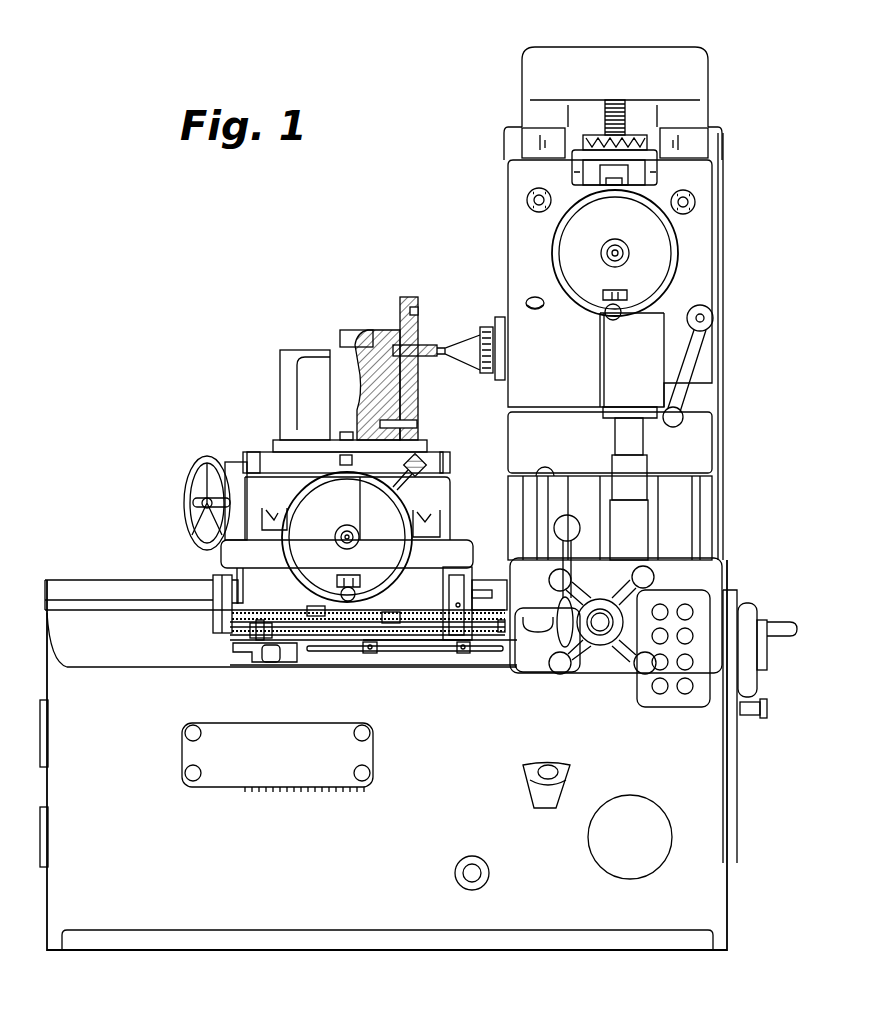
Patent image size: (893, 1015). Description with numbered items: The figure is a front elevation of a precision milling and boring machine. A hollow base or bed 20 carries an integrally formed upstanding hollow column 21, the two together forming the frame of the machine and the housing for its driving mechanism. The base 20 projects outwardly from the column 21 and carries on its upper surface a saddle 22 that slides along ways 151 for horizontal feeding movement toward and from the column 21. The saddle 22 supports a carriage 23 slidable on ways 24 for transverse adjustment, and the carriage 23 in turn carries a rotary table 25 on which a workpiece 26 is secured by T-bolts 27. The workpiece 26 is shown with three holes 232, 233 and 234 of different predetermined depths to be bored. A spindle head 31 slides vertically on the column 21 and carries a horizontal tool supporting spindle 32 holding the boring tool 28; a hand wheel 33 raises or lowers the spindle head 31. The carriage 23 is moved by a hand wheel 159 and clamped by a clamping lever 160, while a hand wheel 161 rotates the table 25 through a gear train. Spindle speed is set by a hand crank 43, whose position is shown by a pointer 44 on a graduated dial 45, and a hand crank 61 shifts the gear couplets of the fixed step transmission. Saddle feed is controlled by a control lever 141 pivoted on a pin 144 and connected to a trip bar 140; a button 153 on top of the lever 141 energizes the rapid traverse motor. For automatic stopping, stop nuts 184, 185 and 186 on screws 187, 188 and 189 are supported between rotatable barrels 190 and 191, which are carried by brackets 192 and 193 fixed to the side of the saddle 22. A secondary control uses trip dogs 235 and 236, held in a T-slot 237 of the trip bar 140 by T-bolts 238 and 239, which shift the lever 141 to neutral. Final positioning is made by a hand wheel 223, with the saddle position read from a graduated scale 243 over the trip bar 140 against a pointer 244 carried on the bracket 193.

The base 20 is at (243, 905).
The column 21 is at (612, 60).
The saddle 22 is at (228, 553).
The carriage 23 is at (433, 500).
The ways 24 is at (430, 532).
The rotary table 25 is at (267, 460).
The workpiece 26 is at (297, 357).
The T-bolts 27 is at (347, 430).
The boring tool 28 is at (427, 347).
The spindle head 31 is at (553, 295).
The tool supporting spindle 32 is at (494, 375).
The hand wheel 33 is at (672, 250).
The hand crank 43 is at (790, 618).
The pointer 44 is at (762, 618).
The graduated dial 45 is at (757, 692).
The hand crank 61 is at (765, 718).
The trip bar 140 is at (243, 655).
The control lever 141 is at (578, 528).
The pin 144 is at (562, 630).
The ways 151 is at (92, 590).
The button 153 is at (562, 513).
The hand wheel 159 is at (303, 495).
The clamping lever 160 is at (407, 465).
The hand wheel 161 is at (190, 472).
The stop nut 184 is at (258, 620).
The stop nut 185 is at (390, 625).
The stop nut 186 is at (315, 605).
The screw 187 is at (318, 655).
The screw 188 is at (367, 647).
The screw 189 is at (412, 608).
The barrel 190 is at (228, 638).
The barrel 191 is at (445, 575).
The bracket 192 is at (212, 587).
The bracket 193 is at (472, 570).
The hand wheel 223 is at (648, 577).
The hole 232 is at (412, 300).
The hole 233 is at (393, 330).
The hole 234 is at (417, 424).
The trip dog 235 is at (380, 653).
The trip dog 236 is at (480, 653).
The T-slot 237 is at (337, 648).
The T-bolt 238 is at (375, 652).
The T-bolt 239 is at (465, 653).
The graduated scale 243 is at (493, 647).
The pointer 244 is at (503, 618).